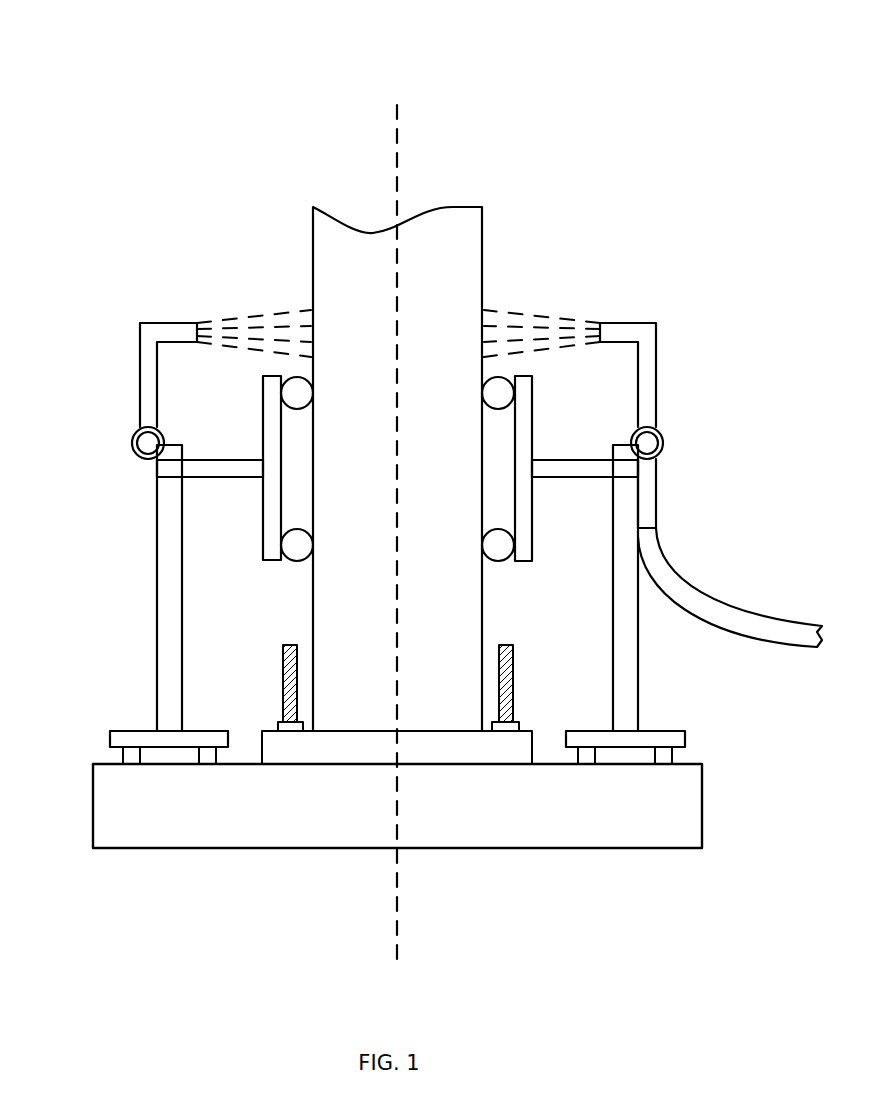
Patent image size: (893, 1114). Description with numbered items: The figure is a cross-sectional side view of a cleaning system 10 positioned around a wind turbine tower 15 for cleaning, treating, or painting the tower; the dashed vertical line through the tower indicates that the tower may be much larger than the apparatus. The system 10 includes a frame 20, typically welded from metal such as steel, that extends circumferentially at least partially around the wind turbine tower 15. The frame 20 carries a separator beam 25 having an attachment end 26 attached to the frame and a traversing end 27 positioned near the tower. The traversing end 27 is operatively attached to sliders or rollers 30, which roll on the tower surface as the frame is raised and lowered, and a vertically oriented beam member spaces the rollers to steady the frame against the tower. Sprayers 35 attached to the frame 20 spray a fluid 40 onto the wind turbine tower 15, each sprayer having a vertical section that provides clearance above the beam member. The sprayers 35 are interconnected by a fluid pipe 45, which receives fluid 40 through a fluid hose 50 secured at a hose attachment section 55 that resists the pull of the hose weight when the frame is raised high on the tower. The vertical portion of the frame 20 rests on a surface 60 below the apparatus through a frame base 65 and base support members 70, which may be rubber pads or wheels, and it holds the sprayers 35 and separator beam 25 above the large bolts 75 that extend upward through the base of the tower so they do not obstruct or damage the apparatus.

The system 10 is at (230, 106).
The wind turbine tower 15 is at (452, 207).
The frame 20 is at (145, 474).
The separator beam 25 is at (585, 478).
The attachment end 26 is at (606, 450).
The traversing end 27 is at (255, 449).
The rollers 30 is at (297, 561).
The sprayers 35 is at (140, 326).
The fluid 40 is at (284, 310).
The fluid pipe 45 is at (140, 438).
The fluid hose 50 is at (672, 562).
The hose attachment section 55 is at (660, 498).
The surface 60 is at (702, 812).
The frame base 65 is at (111, 732).
The base support members 70 is at (686, 744).
The bolts 75 is at (506, 645).